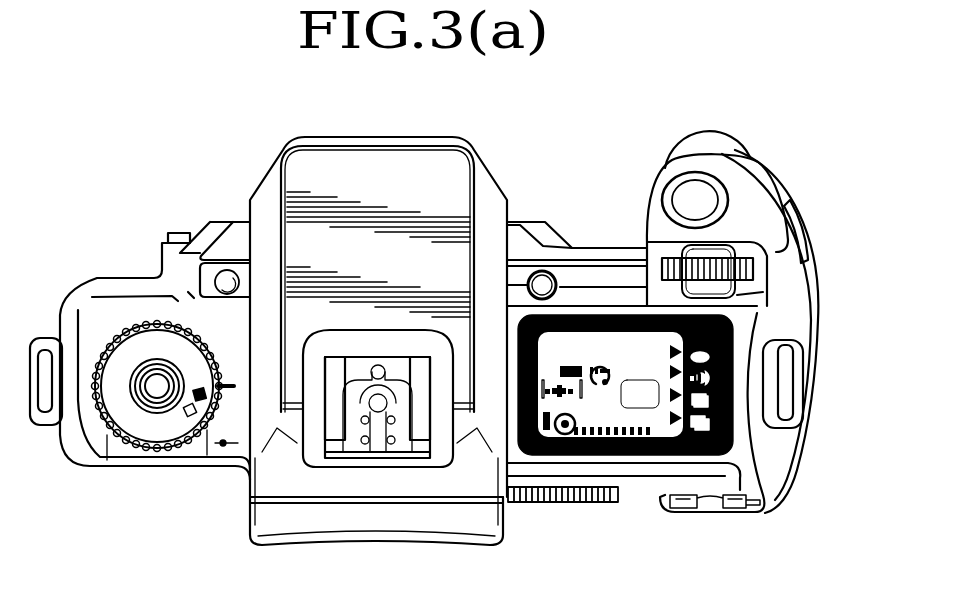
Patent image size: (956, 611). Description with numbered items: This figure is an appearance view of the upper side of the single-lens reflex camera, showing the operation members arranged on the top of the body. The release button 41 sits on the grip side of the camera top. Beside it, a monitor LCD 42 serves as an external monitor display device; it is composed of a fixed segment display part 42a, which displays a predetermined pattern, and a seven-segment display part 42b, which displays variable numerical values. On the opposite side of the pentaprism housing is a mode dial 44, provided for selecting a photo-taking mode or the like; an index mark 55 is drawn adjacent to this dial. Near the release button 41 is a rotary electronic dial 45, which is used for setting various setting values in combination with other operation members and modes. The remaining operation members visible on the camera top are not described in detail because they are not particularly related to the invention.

The release button 41 is at (712, 192).
The monitor LCD 42 is at (715, 426).
The fixed segment display part 42a is at (568, 440).
The 7-segment display part 42b is at (672, 345).
The mode dial 44 is at (122, 410).
The rotary electronic dial 45 is at (753, 268).
The index mark 55 is at (227, 390).